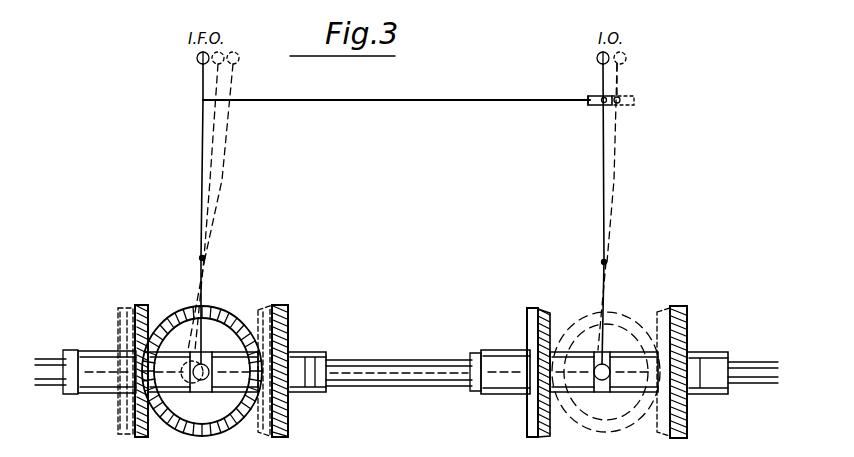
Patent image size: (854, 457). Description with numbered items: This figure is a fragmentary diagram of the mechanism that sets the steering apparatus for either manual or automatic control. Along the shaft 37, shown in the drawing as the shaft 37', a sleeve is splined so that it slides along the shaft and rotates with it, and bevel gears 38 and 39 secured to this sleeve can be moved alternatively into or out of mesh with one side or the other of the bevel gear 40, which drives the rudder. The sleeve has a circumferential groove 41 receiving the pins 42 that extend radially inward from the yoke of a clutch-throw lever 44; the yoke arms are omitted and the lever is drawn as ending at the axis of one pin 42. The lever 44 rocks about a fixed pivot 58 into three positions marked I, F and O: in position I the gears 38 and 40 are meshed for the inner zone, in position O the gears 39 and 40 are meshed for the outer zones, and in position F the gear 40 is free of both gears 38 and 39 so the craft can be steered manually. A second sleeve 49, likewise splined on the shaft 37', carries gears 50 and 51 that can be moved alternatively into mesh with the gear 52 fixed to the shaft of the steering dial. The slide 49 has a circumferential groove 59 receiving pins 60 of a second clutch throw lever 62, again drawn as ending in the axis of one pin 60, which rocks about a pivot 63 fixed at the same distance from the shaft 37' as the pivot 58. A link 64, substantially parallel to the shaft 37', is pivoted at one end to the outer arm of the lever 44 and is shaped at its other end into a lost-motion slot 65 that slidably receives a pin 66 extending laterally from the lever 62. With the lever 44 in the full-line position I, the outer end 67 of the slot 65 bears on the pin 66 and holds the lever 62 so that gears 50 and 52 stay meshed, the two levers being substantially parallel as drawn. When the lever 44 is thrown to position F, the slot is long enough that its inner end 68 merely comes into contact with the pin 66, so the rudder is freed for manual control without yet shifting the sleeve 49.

The drive shaft 37 is at (85, 357).
The shaft 37' is at (552, 356).
The bevel gear 38 is at (142, 318).
The bevel gear 39 is at (288, 322).
The bevel gear 40 is at (213, 313).
The circumferential groove 41 is at (200, 380).
The pins 42 is at (236, 338).
The clutch-throw lever 44 is at (200, 188).
The second sleeve 49 is at (482, 394).
The gear 50 is at (544, 310).
The gear 51 is at (688, 332).
The gear 52 is at (614, 310).
The fixed pivot 58 is at (205, 258).
The circumferential groove 59 is at (604, 382).
The pins 60 is at (638, 338).
The clutch throw lever 62 is at (600, 158).
The pivot 63 is at (606, 262).
The link 64 is at (340, 102).
The lost-motion slot 65 is at (601, 96).
The pin 66 is at (608, 98).
The outer end of slot 67 is at (618, 106).
The inner end of slot 68 is at (590, 104).